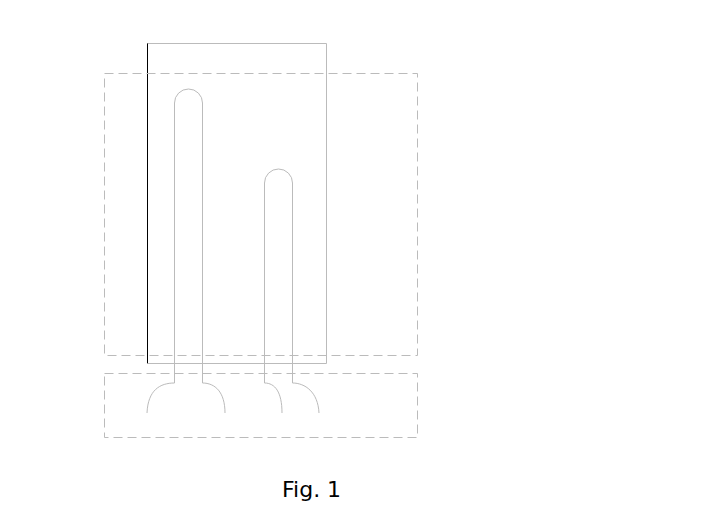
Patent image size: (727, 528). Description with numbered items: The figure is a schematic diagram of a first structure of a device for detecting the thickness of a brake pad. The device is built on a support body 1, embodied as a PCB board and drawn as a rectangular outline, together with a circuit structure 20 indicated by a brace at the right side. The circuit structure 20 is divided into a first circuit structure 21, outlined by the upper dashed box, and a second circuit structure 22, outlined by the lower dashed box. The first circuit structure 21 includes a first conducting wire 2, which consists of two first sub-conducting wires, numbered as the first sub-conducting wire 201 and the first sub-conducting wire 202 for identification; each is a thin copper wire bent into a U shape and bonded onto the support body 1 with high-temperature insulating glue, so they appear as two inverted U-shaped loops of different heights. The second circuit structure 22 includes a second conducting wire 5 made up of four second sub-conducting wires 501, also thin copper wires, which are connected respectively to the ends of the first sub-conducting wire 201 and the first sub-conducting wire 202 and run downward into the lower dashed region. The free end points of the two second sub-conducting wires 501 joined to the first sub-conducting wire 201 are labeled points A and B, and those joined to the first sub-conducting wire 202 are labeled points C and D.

The support body 1 is at (326, 44).
The first conducting wire 2 is at (188, 236).
The first sub-conducting wire 201 is at (202, 199).
The first sub-conducting wire 202 is at (280, 168).
The circuit structure 20 is at (497, 210).
The first circuit structure 21 is at (418, 214).
The second circuit structure 22 is at (418, 400).
The second conducting wire 5 is at (197, 405).
The second sub-conducting wire 501 is at (150, 383).